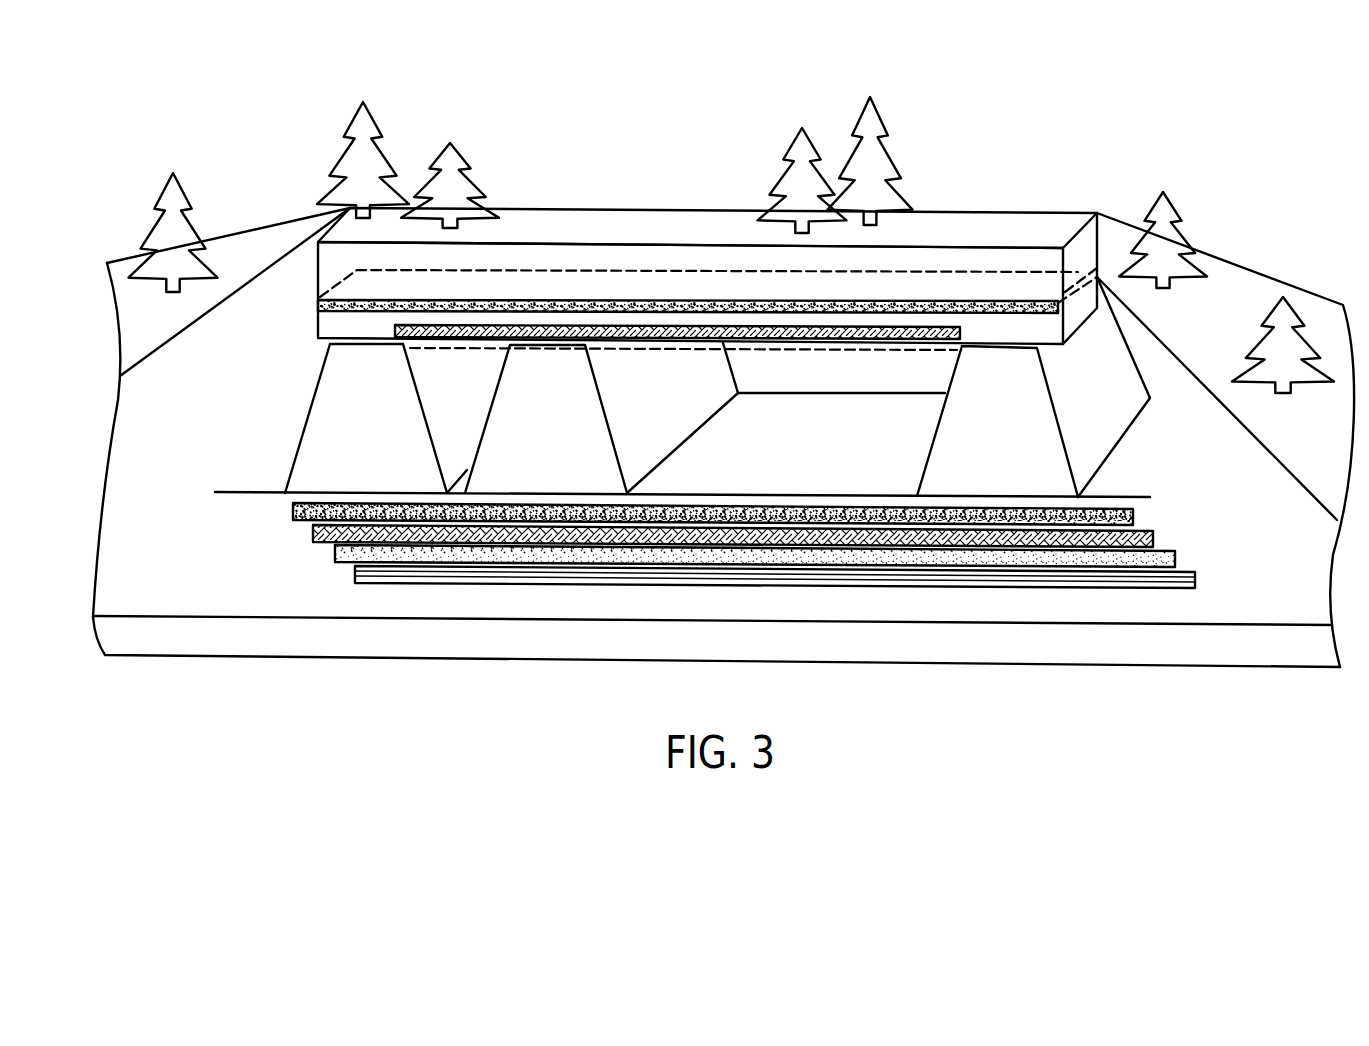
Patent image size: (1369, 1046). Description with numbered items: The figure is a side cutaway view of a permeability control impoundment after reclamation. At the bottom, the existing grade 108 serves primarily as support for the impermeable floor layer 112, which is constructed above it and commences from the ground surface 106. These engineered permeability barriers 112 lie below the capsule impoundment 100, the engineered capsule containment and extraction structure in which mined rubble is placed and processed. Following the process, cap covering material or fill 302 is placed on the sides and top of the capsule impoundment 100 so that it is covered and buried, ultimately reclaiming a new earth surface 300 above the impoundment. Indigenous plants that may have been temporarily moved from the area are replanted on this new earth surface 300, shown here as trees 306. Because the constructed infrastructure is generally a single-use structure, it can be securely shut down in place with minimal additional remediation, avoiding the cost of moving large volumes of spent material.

The capsule impoundment 100 is at (802, 455).
The ground surface 106 is at (165, 616).
The existing grade 108 is at (691, 649).
The impermeable floor layer 112 is at (284, 499).
The new earth surface 300 is at (228, 268).
The cap covering material or fill 302 is at (245, 348).
The trees 306 is at (1170, 206).